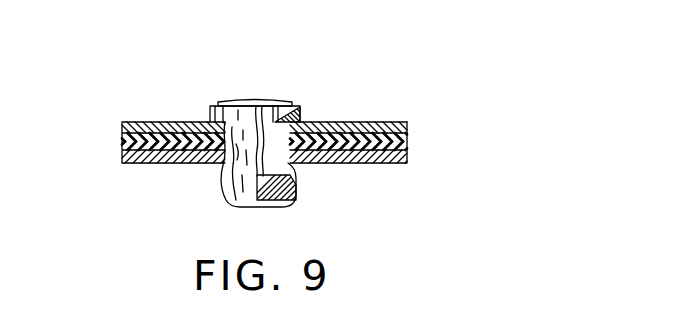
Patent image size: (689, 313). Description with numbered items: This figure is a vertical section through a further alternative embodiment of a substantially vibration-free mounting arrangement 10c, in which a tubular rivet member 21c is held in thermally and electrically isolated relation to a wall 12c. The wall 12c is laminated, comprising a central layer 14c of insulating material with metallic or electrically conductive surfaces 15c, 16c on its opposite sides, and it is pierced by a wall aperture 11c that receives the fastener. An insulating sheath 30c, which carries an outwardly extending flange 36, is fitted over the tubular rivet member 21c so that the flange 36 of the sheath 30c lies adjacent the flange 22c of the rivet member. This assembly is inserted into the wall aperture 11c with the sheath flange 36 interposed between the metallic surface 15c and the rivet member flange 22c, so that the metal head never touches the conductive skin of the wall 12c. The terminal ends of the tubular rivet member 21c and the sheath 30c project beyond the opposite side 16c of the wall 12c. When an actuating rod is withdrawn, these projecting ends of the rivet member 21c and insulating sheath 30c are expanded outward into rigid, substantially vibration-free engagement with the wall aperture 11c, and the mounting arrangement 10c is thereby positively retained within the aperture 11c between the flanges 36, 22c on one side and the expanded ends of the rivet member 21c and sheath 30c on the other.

The mounting arrangement 10c is at (269, 130).
The wall aperture 11c is at (238, 158).
The wall 12c is at (258, 145).
The central layer of insulating material 14c is at (131, 142).
The metallic surface 15c is at (383, 122).
The opposite side 16c is at (385, 163).
The tubular rivet member 21c is at (283, 158).
The flange of the tubular rivet member 22c is at (248, 98).
The insulating sheath 30c is at (231, 189).
The outwardly extending flange 36 is at (302, 112).